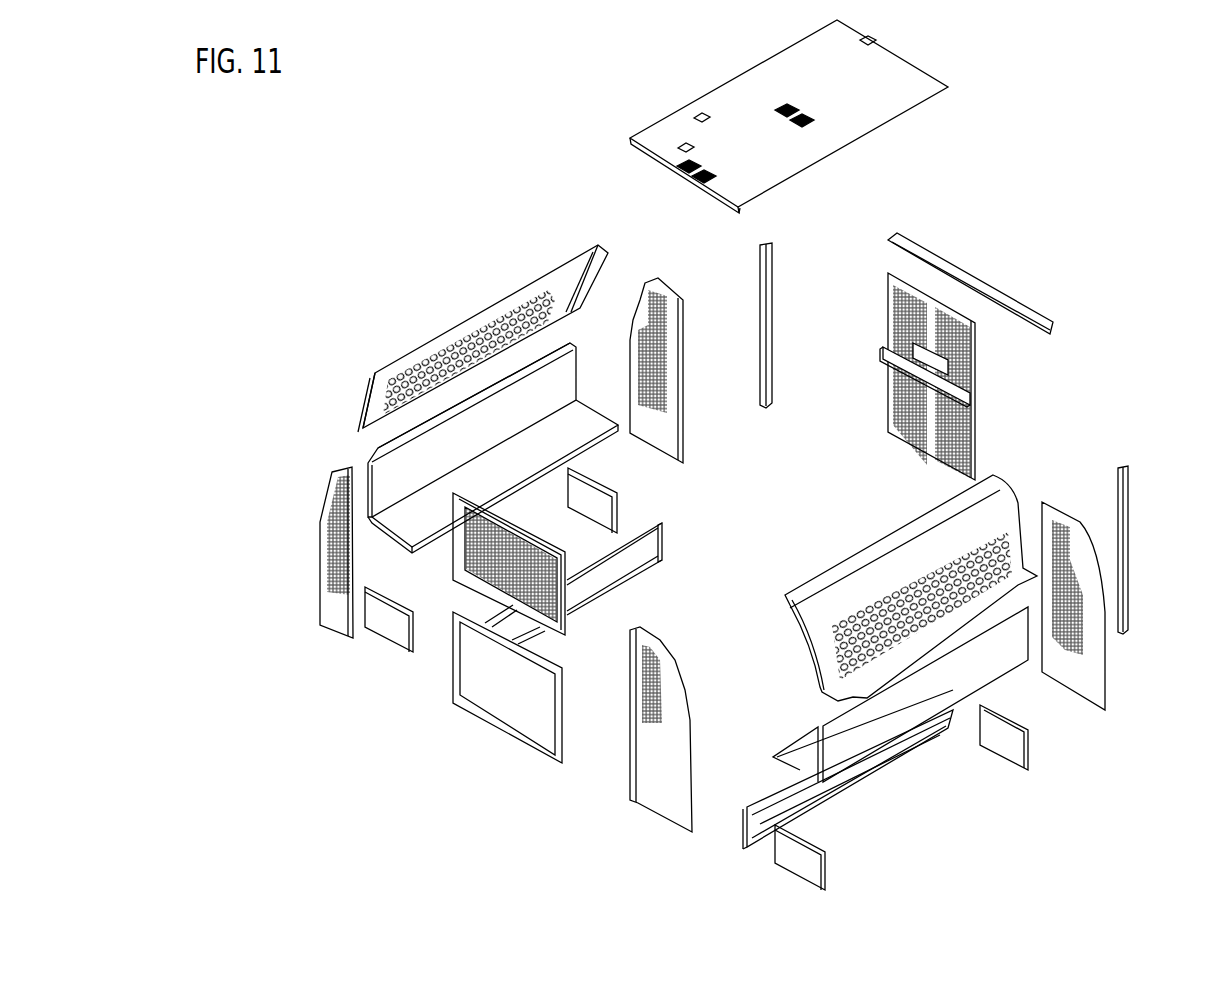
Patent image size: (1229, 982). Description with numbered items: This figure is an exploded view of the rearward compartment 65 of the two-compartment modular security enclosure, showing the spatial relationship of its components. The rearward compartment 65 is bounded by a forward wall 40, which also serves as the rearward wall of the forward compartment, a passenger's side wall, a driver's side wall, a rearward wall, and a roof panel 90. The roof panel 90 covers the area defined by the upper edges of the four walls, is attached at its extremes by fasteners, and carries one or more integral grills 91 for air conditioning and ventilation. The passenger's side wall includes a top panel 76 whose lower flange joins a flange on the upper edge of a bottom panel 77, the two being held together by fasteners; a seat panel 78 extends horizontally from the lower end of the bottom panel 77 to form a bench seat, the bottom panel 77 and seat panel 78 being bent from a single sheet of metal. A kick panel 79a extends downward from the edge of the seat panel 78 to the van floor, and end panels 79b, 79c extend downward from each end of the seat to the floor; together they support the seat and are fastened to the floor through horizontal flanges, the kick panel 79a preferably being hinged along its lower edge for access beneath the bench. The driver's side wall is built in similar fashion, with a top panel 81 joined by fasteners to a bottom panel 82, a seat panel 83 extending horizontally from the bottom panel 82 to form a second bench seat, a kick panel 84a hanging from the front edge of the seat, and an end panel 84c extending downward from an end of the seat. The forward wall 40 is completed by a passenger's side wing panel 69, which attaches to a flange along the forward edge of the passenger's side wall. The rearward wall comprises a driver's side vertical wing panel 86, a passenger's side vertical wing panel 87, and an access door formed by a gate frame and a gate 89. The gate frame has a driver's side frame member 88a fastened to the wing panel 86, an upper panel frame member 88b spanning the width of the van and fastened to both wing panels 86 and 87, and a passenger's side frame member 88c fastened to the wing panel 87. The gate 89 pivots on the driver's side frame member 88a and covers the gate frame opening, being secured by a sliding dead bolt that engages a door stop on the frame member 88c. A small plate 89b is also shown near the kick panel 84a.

The rearward compartment 65 is at (442, 166).
The roof panel 90 is at (862, 123).
The integral grills 91 is at (745, 139).
The top panel 76 is at (462, 316).
The bottom panel 77 is at (390, 472).
The seat panel 78 is at (467, 482).
The passenger's side wing panel 69 is at (337, 617).
The end panel 79b is at (395, 633).
The end panel 79c is at (625, 513).
The kick panel 79a is at (637, 553).
The forward wall 40 is at (570, 740).
The passenger's side vertical wing panel 87 is at (653, 430).
The passenger's side frame member 88c is at (775, 398).
The upper panel frame member 88b is at (1005, 290).
The gate 89 is at (978, 387).
The top panel 81 is at (822, 607).
The bottom panel 82 is at (990, 673).
The seat panel 83 is at (807, 752).
The kick panel 84a is at (833, 800).
The end panel 84c is at (1007, 748).
The cover plate 89b is at (797, 865).
The driver's side vertical wing panel 86 is at (1087, 675).
The driver's side frame member 88a is at (1128, 597).